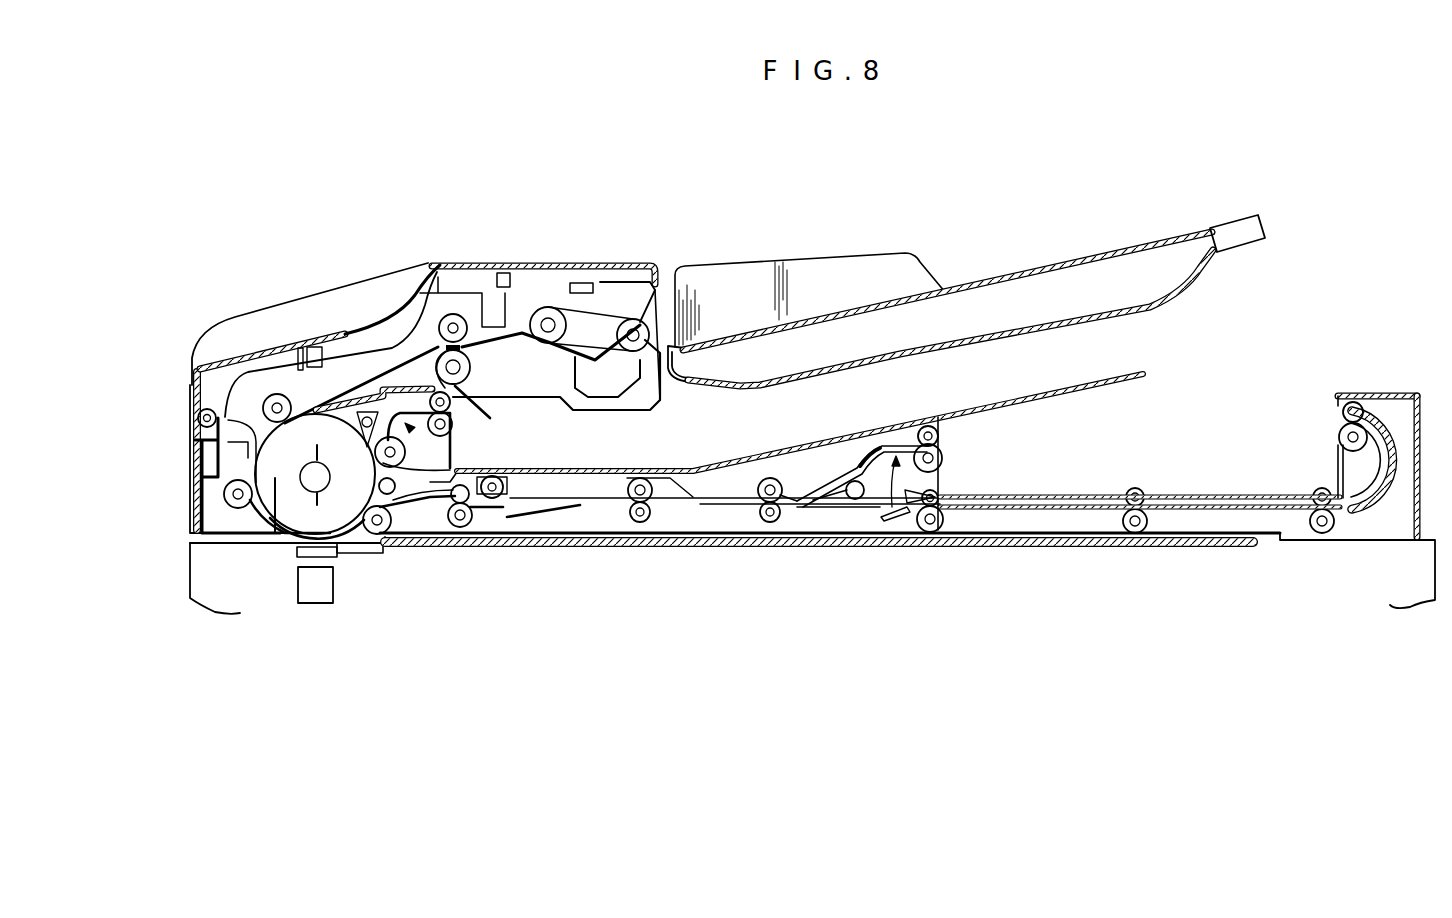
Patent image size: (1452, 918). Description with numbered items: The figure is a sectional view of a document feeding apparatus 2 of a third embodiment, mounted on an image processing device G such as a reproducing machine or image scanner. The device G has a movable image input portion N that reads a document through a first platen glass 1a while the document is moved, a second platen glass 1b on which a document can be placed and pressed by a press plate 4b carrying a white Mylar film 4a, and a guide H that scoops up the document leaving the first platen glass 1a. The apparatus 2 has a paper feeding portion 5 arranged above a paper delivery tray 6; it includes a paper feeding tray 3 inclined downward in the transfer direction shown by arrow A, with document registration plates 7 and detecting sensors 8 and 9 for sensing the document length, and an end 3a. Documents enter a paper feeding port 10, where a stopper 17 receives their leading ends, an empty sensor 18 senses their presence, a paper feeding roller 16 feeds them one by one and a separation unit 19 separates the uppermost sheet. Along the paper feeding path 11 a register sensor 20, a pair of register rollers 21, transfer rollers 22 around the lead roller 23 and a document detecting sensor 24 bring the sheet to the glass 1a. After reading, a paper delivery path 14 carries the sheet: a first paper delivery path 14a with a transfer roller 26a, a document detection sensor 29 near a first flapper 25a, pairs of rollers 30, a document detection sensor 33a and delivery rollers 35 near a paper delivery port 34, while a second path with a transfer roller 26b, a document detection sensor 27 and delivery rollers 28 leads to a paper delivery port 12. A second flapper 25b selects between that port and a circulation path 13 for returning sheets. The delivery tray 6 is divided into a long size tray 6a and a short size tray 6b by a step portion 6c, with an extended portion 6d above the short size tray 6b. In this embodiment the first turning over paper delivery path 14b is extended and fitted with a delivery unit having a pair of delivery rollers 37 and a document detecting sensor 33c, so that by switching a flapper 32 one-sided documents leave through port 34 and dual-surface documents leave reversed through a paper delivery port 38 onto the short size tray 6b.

The document feeding apparatus 2 is at (476, 185).
The paper feeding portion 5 is at (525, 248).
The paper feeding path 11 is at (410, 397).
The second flapper 25b is at (367, 420).
The transfer rollers 22 is at (270, 395).
The lead roller 23 is at (218, 450).
The document detecting sensor 24 is at (255, 515).
The circulation path 13 is at (343, 431).
The first flapper 25a is at (360, 498).
The delivery rollers 28 is at (458, 424).
The register rollers 21 is at (453, 312).
The paper delivery port 12 is at (458, 412).
The document detection sensor 27 is at (455, 458).
The register sensor 20 is at (490, 356).
The separation unit 19 is at (548, 305).
The paper feeding roller 16 is at (630, 318).
The stopper 17 is at (650, 378).
The empty sensor 18 is at (605, 376).
The paper feeding port 10 is at (662, 340).
The document registration plates 7 is at (842, 268).
The paper feeding tray 3 is at (1222, 222).
The tray end 3a is at (1264, 230).
The detecting sensor 9 is at (1147, 255).
The detecting sensor 8 is at (960, 291).
The arrow A is at (1003, 261).
The paper delivery path 14 is at (712, 484).
The paper delivery tray 6 is at (925, 378).
The long size tray 6a is at (900, 432).
The step portion 6c is at (945, 432).
The short size tray 6b is at (1020, 497).
The extended portion 6d is at (1128, 372).
The document detection sensor 33a is at (868, 512).
The flapper 32 is at (840, 500).
The delivery rollers 35 is at (945, 448).
The paper delivery port 34 is at (948, 450).
The pairs of rollers 30 is at (483, 536).
The document detection sensor 29 is at (419, 516).
The white Mylar film 4a is at (432, 520).
The transfer roller 26a is at (378, 538).
The transfer roller 26b is at (437, 530).
The first platen glass 1a is at (293, 552).
The guide H is at (350, 550).
The image input portion N is at (313, 600).
The second platen glass 1b is at (712, 550).
The first paper delivery path 14a is at (533, 505).
The first turning over paper delivery path 14b is at (1210, 512).
The press plate 4b is at (1284, 542).
The image processing device G is at (1435, 585).
The document detecting sensor 33c is at (1372, 458).
The paper delivery port 38 is at (1342, 420).
The delivery rollers 37 is at (1345, 447).